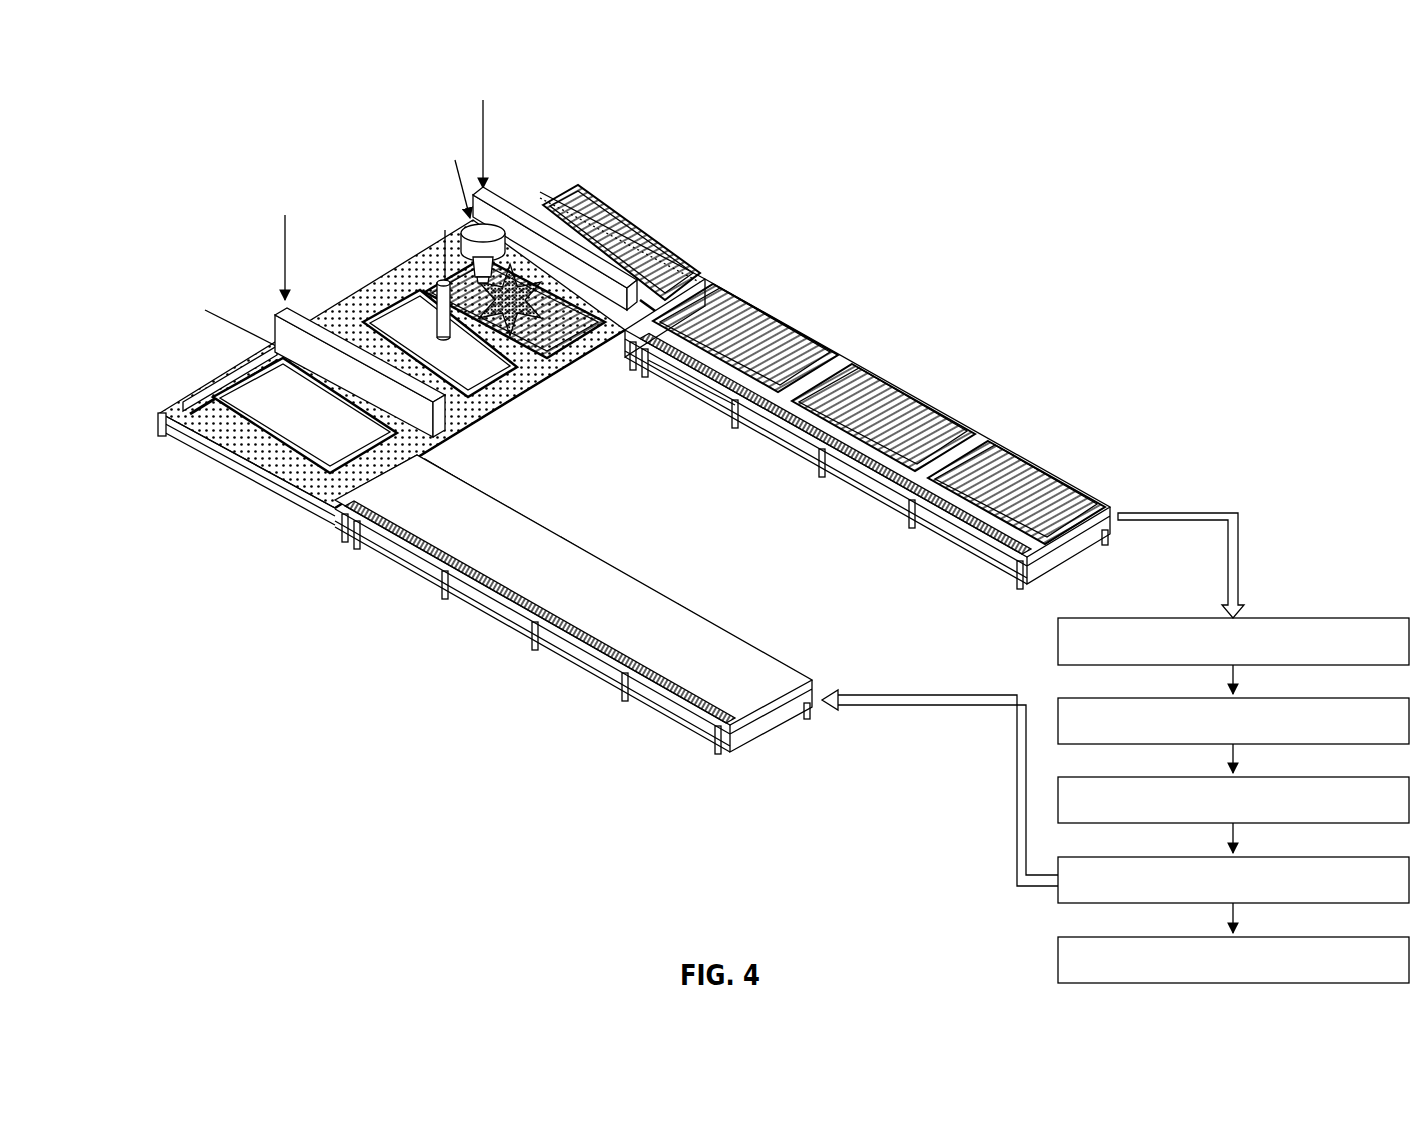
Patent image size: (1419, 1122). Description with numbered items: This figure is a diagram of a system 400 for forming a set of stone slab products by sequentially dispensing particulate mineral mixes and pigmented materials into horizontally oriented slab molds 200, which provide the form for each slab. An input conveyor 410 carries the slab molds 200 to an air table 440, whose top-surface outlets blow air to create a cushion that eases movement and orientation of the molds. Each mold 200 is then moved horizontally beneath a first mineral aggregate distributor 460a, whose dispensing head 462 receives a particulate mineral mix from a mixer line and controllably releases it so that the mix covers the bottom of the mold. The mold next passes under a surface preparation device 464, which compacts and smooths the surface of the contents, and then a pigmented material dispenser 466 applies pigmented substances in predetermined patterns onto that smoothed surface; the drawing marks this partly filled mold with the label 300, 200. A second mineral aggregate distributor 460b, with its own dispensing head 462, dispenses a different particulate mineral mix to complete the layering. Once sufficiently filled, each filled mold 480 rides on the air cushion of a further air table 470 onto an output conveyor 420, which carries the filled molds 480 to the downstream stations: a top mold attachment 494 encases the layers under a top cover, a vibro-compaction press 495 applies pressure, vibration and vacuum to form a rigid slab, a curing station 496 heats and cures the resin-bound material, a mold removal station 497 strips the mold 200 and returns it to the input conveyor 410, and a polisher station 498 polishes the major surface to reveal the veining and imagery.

The system 400 is at (172, 126).
The slab mold 200 is at (553, 193).
The slab / product in mold 300 is at (575, 354).
The input conveyor 410 is at (795, 672).
The output conveyor 420 is at (975, 430).
The air table 440 is at (183, 407).
The mineral aggregate distributor 460a is at (280, 312).
The mineral aggregate distributor 460b is at (553, 233).
The dispensing head 462 is at (215, 315).
The surface preparation device 464 is at (407, 315).
The pigmented material dispenser 466 is at (488, 230).
The air table 470 is at (703, 280).
The filled mold 480 is at (796, 336).
The top mold attachment 494 is at (1058, 637).
The vibro-compaction press 495 is at (1058, 700).
The curing station 496 is at (1060, 777).
The mold removal station 497 is at (1058, 903).
The polisher station 498 is at (1058, 975).